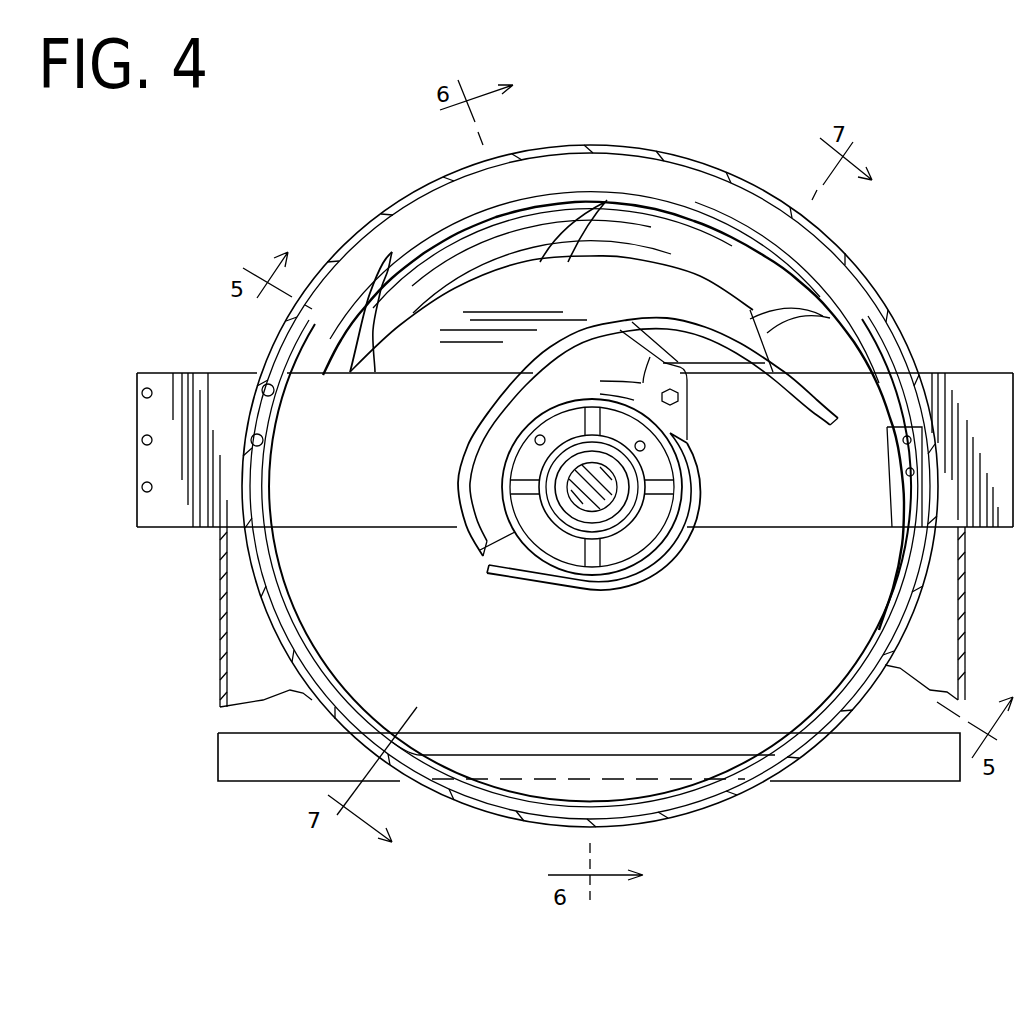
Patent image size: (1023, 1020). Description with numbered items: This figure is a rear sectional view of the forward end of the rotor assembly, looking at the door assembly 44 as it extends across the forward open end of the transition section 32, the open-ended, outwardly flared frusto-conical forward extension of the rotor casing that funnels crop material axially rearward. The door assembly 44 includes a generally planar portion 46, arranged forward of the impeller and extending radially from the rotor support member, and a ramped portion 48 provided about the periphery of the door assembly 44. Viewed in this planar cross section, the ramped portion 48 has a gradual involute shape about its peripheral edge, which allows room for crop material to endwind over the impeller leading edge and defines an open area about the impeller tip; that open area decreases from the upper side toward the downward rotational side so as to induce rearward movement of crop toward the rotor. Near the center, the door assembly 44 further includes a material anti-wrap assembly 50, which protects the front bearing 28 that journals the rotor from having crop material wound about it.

The front bearing 28 is at (597, 487).
The transition section 32 is at (758, 168).
The door assembly 44 is at (859, 314).
The planar portion 46 is at (595, 263).
The ramped portion 48 is at (400, 261).
The anti-wrap assembly 50 is at (529, 596).